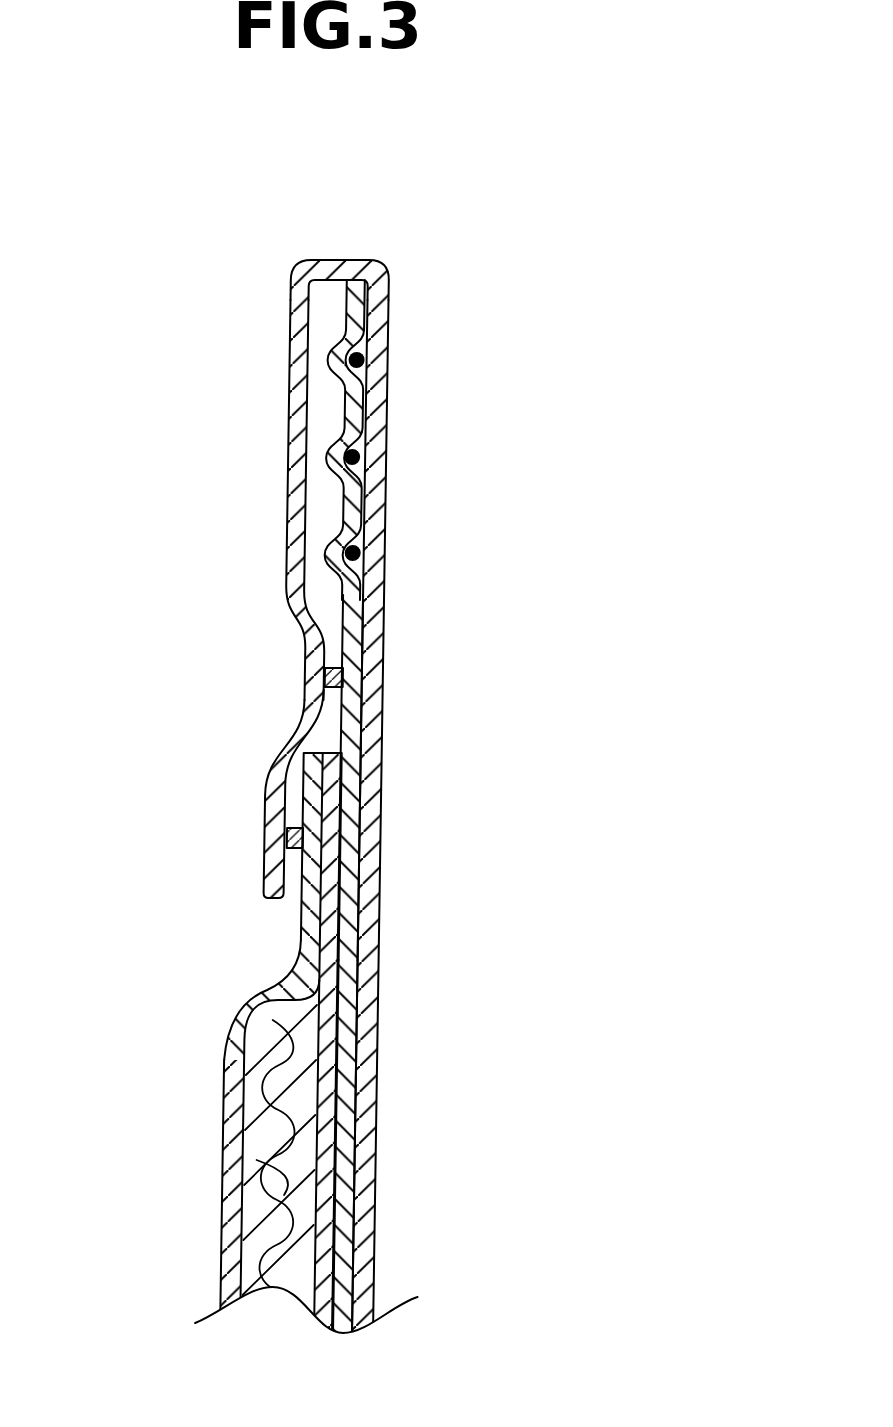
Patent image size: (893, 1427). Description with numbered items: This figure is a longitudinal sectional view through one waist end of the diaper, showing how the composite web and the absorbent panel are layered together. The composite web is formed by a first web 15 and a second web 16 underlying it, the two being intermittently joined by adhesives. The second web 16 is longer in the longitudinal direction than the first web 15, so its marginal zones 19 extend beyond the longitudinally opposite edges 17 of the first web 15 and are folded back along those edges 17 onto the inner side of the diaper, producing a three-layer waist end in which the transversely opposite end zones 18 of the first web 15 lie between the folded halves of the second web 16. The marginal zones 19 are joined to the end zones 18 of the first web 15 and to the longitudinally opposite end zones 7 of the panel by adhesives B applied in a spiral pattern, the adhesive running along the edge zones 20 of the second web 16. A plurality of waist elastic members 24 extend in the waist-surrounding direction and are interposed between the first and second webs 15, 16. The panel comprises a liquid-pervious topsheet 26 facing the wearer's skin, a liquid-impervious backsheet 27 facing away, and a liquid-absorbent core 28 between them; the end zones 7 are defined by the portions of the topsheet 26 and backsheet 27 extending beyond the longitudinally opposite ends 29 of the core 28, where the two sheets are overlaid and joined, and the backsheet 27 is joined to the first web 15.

The longitudinally opposite end zones of the panel 7 is at (326, 884).
The first web 15 is at (351, 722).
The second web 16 is at (366, 640).
The longitudinally opposite edges of the first web 17 is at (349, 280).
The transversely opposite end zones of the first web 18 is at (348, 508).
The marginal zones of the second web 19 is at (284, 420).
The edge zones of the second web 20 is at (276, 900).
The waist elastic members 24 is at (356, 553).
The liquid-pervious topsheet 26 is at (227, 1062).
The liquid-impervious backsheet 27 is at (333, 1143).
The liquid-absorbent core 28 is at (268, 1165).
The longitudinally opposite ends of the core 29 is at (343, 977).
The adhesives B is at (323, 673).